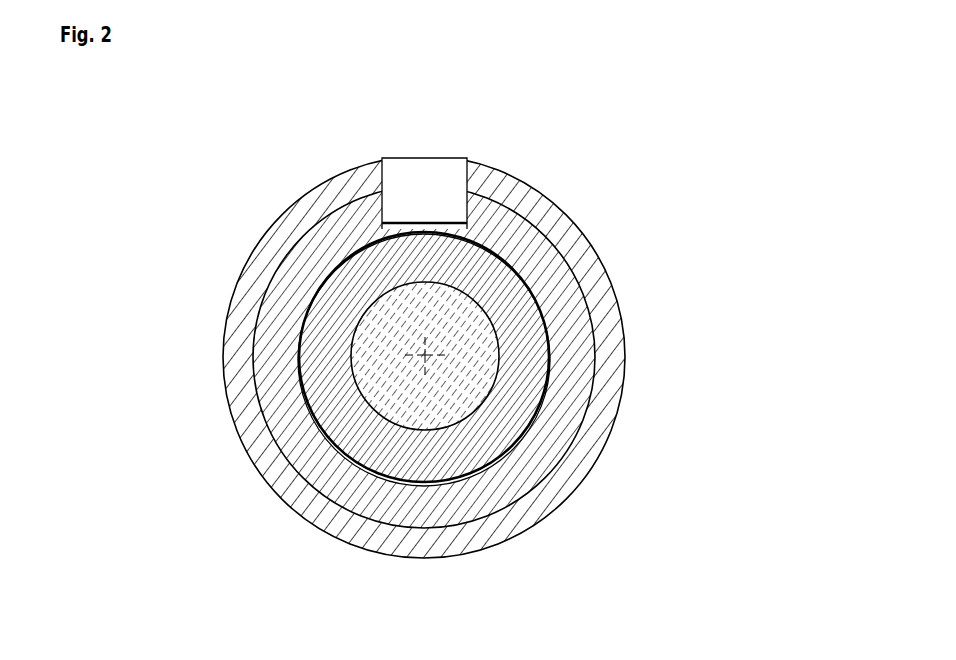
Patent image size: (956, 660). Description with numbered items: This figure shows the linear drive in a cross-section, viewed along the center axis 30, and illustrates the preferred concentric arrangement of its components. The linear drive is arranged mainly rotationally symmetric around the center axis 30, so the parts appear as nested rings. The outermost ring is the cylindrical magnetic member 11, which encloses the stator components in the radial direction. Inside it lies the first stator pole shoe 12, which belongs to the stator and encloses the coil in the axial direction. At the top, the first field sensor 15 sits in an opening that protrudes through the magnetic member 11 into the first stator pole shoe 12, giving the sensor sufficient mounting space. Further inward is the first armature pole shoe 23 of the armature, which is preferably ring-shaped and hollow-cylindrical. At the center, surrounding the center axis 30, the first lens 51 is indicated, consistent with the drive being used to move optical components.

The magnetic member 11 is at (587, 262).
The first stator pole shoe 12 is at (573, 310).
The first field sensor 15 is at (426, 185).
The first armature pole shoe 23 is at (520, 362).
The center axis 30 is at (422, 357).
The first lens 51 is at (440, 392).